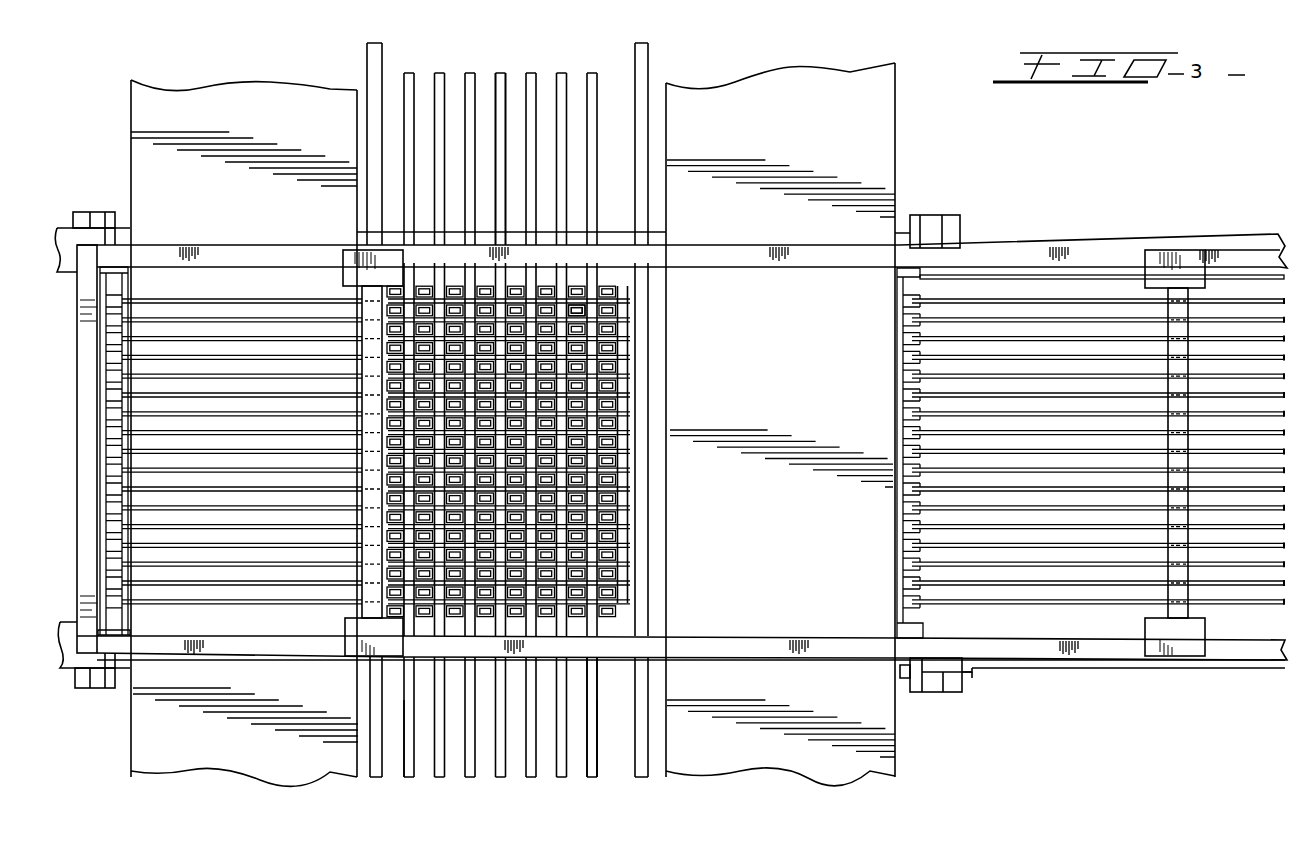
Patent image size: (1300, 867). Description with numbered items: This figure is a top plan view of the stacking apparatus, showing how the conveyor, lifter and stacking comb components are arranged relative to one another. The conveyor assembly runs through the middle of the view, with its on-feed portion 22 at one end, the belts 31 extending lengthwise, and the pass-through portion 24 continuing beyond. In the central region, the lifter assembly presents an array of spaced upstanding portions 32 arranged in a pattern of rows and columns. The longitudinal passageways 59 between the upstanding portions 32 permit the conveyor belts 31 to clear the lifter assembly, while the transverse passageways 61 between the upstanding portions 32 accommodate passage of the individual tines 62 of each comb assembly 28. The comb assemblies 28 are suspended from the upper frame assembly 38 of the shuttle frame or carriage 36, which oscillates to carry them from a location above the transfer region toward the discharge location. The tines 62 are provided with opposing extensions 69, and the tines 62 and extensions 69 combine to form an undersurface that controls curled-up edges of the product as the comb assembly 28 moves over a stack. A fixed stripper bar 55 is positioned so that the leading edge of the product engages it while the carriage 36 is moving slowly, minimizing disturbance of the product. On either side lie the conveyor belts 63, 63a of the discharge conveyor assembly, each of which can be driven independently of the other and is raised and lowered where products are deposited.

The on-feed portion 22 is at (453, 791).
The pass-through portion 24 is at (542, 61).
The comb assembly 28 is at (340, 297).
The belt 31 is at (497, 100).
The upstanding portion 32 is at (578, 310).
The shuttle frame or carriage 36 is at (991, 246).
The upper frame assembly 38 is at (1022, 656).
The stripper bar 55 is at (905, 285).
The longitudinal passageway 59 is at (605, 606).
The transverse passageway 61 is at (616, 461).
The tine 62 is at (627, 360).
The conveyor belt 63 is at (260, 117).
The conveyor belt 63a is at (812, 120).
The opposing extension 69 is at (262, 600).